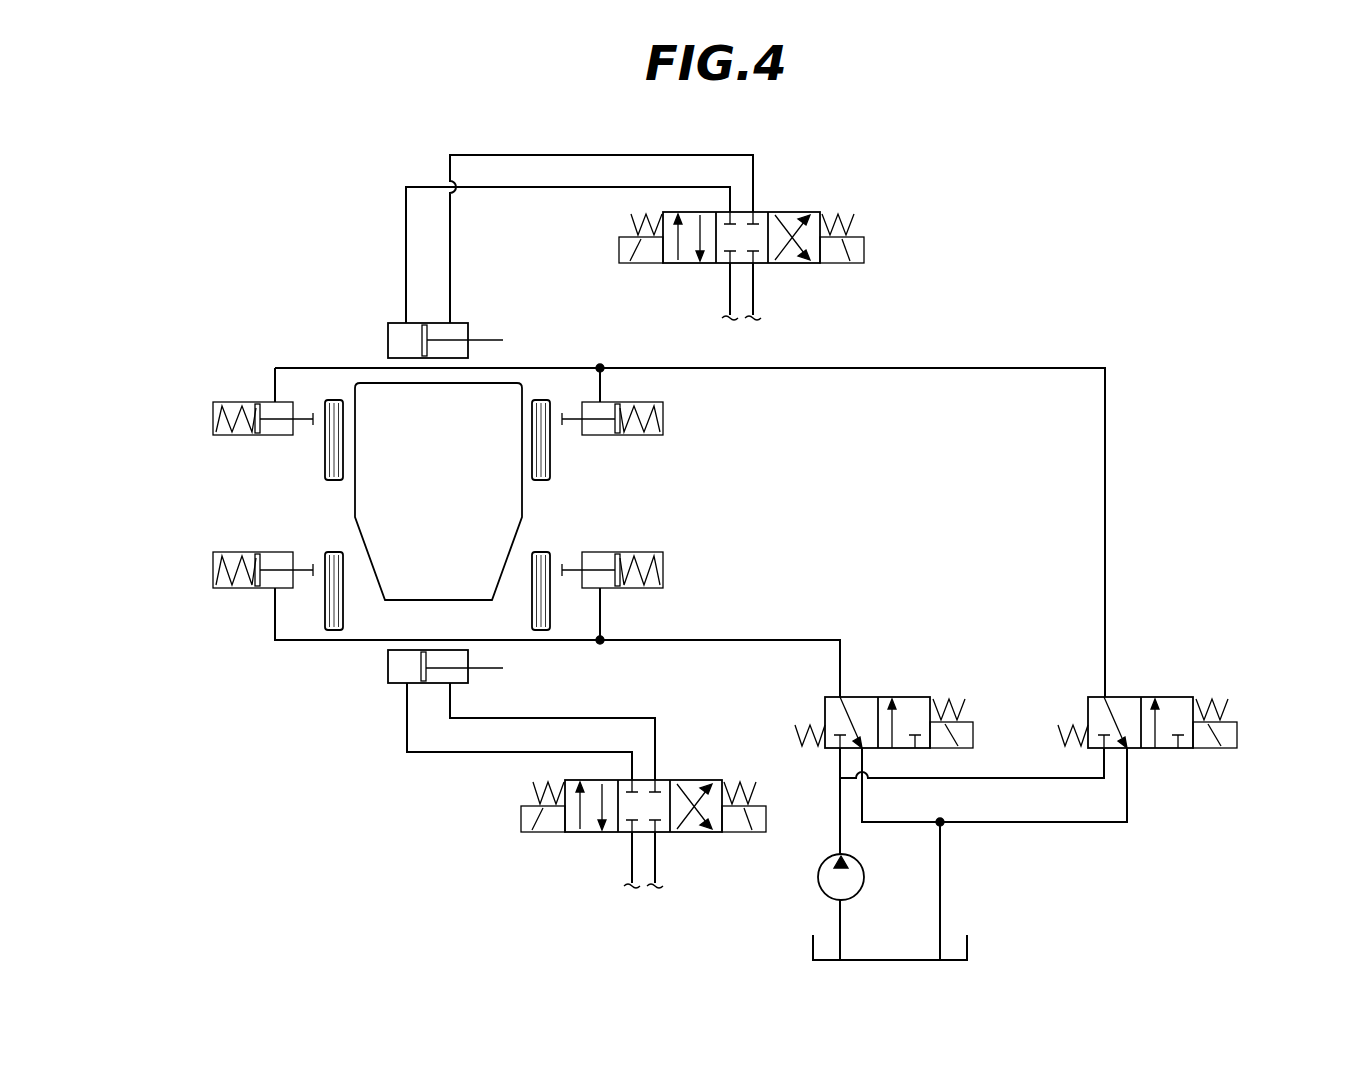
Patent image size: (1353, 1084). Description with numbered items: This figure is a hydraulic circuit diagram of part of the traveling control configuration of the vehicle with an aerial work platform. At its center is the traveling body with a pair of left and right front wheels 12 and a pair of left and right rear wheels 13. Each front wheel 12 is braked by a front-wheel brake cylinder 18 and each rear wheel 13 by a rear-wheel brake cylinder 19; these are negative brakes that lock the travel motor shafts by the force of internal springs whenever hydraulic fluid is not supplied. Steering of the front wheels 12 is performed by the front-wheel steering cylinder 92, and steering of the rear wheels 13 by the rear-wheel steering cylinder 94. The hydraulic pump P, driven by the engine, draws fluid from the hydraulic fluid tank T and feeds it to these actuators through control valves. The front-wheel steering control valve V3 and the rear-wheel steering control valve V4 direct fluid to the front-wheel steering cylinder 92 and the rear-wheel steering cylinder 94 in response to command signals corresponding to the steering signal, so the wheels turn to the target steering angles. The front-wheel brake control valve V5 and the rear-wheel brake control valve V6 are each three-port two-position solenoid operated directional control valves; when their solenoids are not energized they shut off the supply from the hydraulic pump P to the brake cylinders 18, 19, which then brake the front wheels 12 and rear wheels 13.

The front wheel 12 is at (325, 462).
The rear wheel 13 is at (330, 552).
The front-wheel brake cylinder 18 is at (225, 437).
The rear-wheel brake cylinder 19 is at (225, 552).
The front-wheel steering cylinder 92 is at (388, 335).
The rear-wheel steering cylinder 94 is at (388, 668).
The front-wheel steering control valve V3 is at (815, 212).
The rear-wheel steering control valve V4 is at (712, 780).
The front-wheel brake control valve V5 is at (1183, 697).
The rear-wheel brake control valve V6 is at (920, 697).
The hydraulic pump P is at (818, 877).
The hydraulic fluid tank T is at (967, 947).